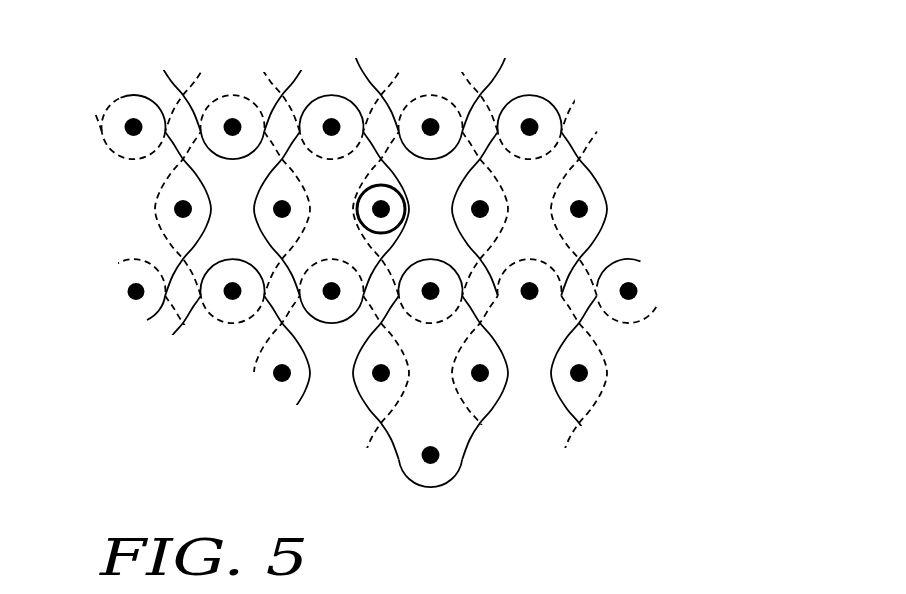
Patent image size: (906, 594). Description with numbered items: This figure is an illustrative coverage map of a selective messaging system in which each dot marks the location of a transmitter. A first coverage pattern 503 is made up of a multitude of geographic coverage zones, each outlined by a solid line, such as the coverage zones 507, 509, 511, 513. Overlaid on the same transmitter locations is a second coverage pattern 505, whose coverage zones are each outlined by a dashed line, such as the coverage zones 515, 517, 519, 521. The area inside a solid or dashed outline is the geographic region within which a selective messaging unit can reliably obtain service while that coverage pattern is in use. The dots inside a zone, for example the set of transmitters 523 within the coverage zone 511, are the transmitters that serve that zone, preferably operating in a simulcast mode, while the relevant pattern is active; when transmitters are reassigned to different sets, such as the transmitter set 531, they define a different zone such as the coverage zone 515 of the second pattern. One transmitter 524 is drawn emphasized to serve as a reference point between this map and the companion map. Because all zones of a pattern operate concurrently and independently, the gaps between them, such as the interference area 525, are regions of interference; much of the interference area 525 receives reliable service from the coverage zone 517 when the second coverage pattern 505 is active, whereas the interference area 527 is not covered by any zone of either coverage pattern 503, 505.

The first coverage pattern 503 is at (592, 115).
The second coverage pattern 505 is at (135, 204).
The coverage zone 507 is at (322, 96).
The coverage zone 509 is at (534, 93).
The coverage zone 511 is at (430, 489).
The coverage zone 513 is at (636, 258).
The coverage zone 515 is at (230, 95).
The coverage zone 517 is at (428, 95).
The coverage zone 519 is at (365, 432).
The coverage zone 521 is at (606, 366).
The set of transmitters 523 is at (430, 300).
The emphasized transmitter 524 is at (357, 199).
The interference area 525 is at (433, 154).
The interference area 527 is at (331, 326).
The transmitter set 531 is at (229, 283).